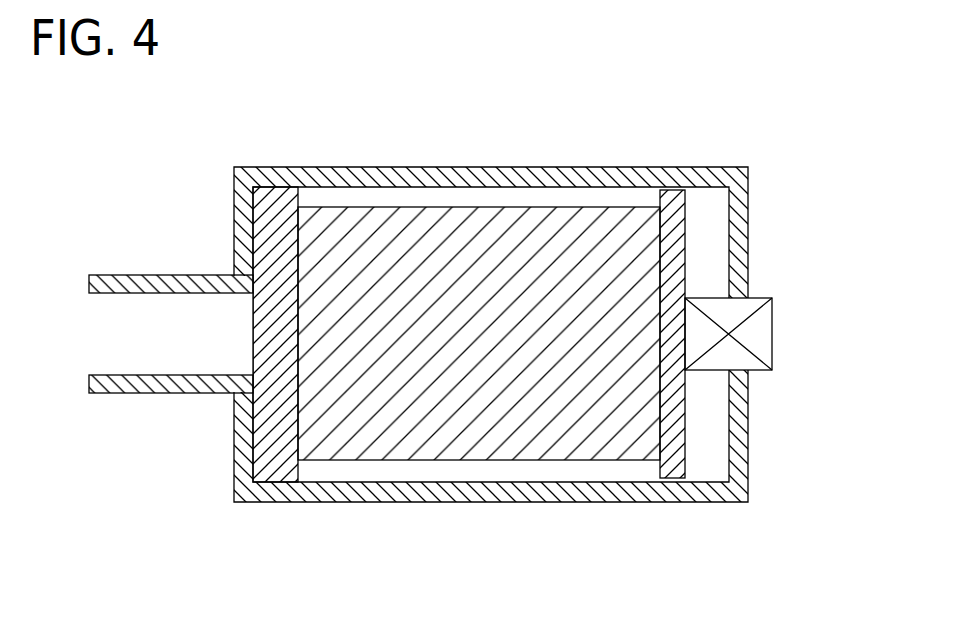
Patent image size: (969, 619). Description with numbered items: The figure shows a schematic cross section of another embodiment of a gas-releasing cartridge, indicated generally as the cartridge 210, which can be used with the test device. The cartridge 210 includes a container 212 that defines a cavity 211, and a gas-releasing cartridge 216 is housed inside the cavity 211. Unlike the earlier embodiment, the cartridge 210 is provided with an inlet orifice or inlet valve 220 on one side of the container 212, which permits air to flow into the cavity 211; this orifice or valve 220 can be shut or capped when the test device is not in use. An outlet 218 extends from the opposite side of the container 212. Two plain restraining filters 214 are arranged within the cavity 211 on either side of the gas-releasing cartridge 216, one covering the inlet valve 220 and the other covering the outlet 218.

The cartridge 210 is at (480, 301).
The cavity 211 is at (384, 188).
The container 212 is at (750, 231).
The plain restraining filter 214 is at (686, 450).
The gas-releasing cartridge 216 is at (517, 443).
The outlet 218 is at (122, 335).
The inlet orifice or inlet valve 220 is at (773, 337).